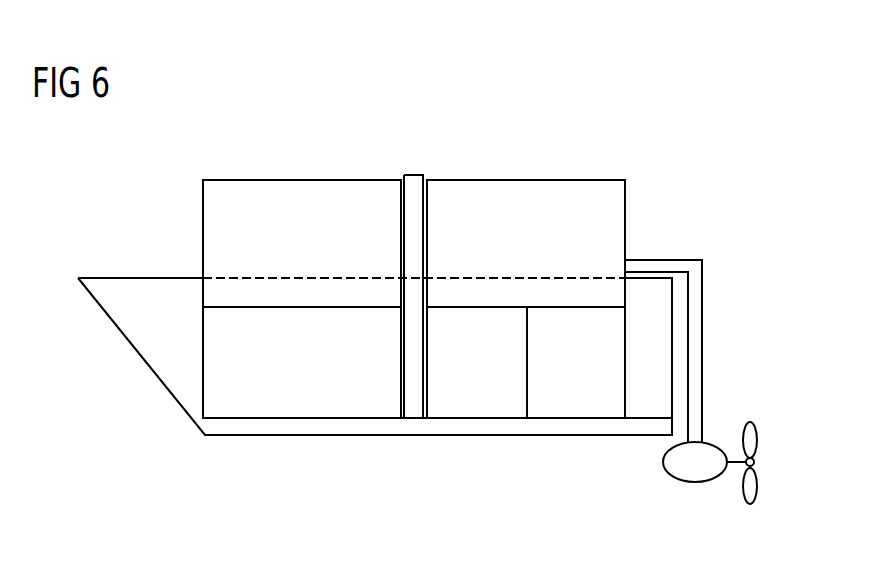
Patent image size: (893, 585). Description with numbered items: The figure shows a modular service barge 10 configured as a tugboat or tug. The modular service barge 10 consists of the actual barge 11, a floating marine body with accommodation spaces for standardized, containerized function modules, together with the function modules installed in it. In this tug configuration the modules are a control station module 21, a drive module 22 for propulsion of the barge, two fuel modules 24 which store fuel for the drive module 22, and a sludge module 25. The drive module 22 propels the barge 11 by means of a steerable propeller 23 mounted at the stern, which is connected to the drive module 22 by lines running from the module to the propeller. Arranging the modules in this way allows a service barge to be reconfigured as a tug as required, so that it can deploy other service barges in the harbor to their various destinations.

The modular service barge 10 is at (190, 482).
The barge 11 is at (665, 353).
The control station module 21 is at (305, 191).
The drive module 22 is at (533, 191).
The steerable propeller 23 is at (697, 470).
The fuel modules 24 is at (308, 410).
The sludge module 25 is at (578, 410).